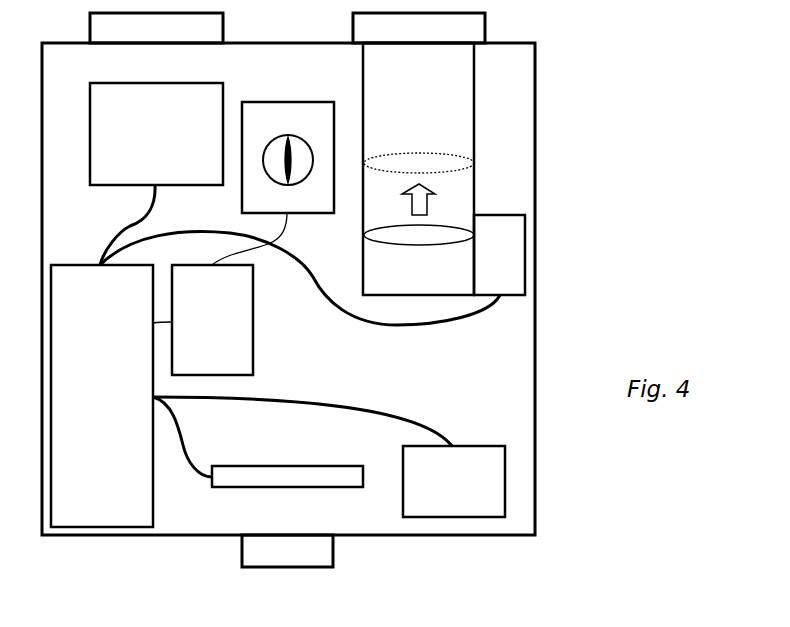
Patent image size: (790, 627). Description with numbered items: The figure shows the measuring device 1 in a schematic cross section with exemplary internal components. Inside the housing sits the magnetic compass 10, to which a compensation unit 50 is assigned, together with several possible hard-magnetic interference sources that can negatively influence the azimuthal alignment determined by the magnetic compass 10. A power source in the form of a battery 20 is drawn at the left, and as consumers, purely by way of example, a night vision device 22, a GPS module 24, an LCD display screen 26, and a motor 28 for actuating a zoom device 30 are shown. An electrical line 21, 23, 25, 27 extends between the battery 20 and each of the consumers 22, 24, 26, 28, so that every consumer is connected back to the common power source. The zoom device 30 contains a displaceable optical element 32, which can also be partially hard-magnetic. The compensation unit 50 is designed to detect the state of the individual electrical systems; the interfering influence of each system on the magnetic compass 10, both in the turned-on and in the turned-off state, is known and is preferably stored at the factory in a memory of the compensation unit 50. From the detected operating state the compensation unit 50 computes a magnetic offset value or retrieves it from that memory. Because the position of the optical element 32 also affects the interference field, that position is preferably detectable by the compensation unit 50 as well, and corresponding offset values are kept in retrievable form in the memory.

The measuring device 1 is at (331, 290).
The magnetic compass 10 is at (292, 134).
The battery 20 is at (115, 421).
The electrical line 21 is at (113, 230).
The night vision device 22 is at (177, 150).
The electrical line 23 is at (302, 406).
The GPS module 24 is at (468, 491).
The electrical line 25 is at (197, 457).
The LCD display screen 26 is at (287, 459).
The electrical line 27 is at (300, 280).
The motor 28 is at (509, 272).
The zoom device 30 is at (373, 87).
The displaceable optical element 32 is at (419, 255).
The compensation unit 50 is at (226, 329).